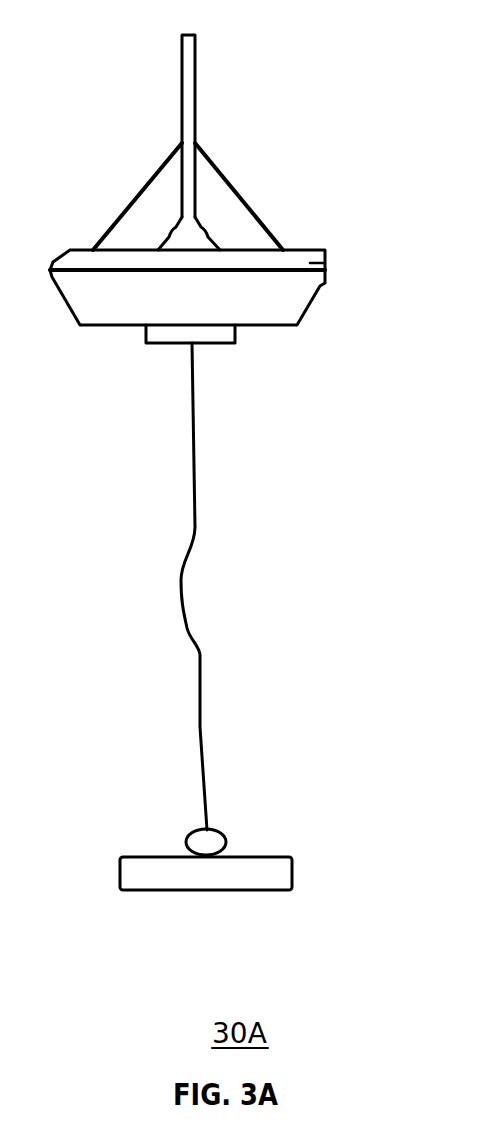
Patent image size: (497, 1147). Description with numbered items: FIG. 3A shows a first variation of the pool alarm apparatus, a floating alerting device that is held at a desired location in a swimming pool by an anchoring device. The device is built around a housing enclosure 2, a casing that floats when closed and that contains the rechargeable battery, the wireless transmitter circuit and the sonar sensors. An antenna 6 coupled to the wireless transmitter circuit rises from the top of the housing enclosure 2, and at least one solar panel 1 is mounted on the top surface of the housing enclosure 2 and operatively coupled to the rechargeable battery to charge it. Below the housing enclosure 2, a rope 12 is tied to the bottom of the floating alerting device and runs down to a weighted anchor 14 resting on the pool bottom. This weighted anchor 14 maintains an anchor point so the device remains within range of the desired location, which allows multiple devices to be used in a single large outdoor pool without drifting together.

The antenna 6 is at (179, 56).
The solar panel 1 is at (143, 173).
The housing enclosure 2 is at (327, 260).
The rope 12 is at (195, 532).
The weighted anchor 14 is at (293, 870).